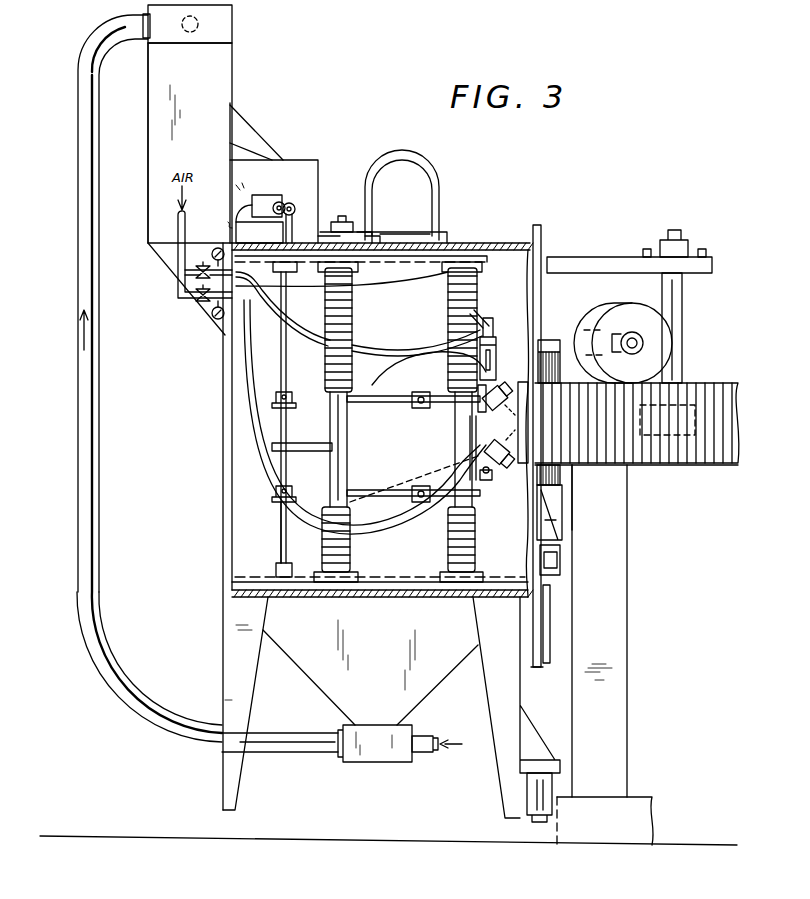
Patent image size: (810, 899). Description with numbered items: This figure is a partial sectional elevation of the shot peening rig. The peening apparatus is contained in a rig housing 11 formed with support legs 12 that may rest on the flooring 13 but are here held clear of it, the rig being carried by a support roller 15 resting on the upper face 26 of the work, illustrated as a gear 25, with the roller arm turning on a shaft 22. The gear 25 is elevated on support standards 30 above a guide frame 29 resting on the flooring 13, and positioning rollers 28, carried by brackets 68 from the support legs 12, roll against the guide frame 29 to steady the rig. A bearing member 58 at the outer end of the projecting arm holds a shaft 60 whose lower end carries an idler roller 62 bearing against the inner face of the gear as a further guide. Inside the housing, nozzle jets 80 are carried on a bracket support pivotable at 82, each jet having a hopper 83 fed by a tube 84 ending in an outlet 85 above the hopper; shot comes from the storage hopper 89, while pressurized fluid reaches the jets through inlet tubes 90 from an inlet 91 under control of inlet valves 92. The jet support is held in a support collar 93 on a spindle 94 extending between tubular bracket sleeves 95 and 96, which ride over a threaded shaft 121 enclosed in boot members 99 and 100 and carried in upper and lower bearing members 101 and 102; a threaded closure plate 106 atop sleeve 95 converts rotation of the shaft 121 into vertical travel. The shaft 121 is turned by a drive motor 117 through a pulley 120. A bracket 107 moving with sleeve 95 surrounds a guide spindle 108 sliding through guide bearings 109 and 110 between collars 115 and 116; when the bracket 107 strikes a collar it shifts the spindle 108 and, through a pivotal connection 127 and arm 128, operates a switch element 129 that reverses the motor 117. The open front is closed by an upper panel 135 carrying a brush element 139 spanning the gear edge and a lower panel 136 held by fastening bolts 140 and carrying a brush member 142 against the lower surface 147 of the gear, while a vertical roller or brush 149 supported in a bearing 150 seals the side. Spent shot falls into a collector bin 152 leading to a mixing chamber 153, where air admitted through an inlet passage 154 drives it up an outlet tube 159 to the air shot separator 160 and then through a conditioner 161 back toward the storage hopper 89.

The rig housing 11 is at (228, 404).
The support legs 12 is at (224, 672).
The flooring 13 is at (297, 838).
The support roller 15 is at (610, 314).
The shaft 22 is at (645, 343).
The gear 25 is at (646, 463).
The upper face 26 is at (706, 384).
The positioning rollers 28 is at (530, 800).
The guide frame 29 is at (602, 832).
The support standards 30 is at (627, 727).
The bearing member 58 is at (712, 263).
The shaft 60 is at (682, 286).
The idler roller 62 is at (720, 424).
The brackets 68 is at (520, 768).
The nozzle jets 80 is at (507, 422).
The pivot 82 is at (490, 394).
The hopper 83 is at (468, 450).
The feed tube 84 is at (486, 332).
The outlet 85 is at (496, 352).
The storage hopper 89 is at (150, 159).
The inlet tubes 90 is at (400, 414).
The inlet 91 is at (178, 222).
The inlet valves 92 is at (200, 297).
The support collar 93 is at (414, 500).
The spindle 94 is at (402, 401).
The tubular bracket sleeve 95 is at (347, 438).
The tubular bracket sleeve 96 is at (456, 464).
The boot member 99 is at (350, 553).
The boot member 100 is at (352, 304).
The upper bearing member 101 is at (358, 262).
The lower bearing member 102 is at (330, 597).
The closure plate member 106 is at (286, 404).
The bracket 107 is at (312, 451).
The guide spindle 108 is at (281, 537).
The guide bearing 109 is at (278, 572).
The guide bearing 110 is at (298, 268).
The collar 115 is at (276, 496).
The collar 116 is at (280, 394).
The drive motor 117 is at (430, 170).
The pulley 120 is at (341, 222).
The threaded shaft 121 is at (342, 233).
The pivotal connection 127 is at (296, 206).
The arm 128 is at (280, 202).
The switch element 129 is at (258, 195).
The upper closing panel 135 is at (542, 232).
The lower closing panel 136 is at (541, 668).
The brush element 139 is at (555, 340).
The fastening bolts 140 is at (551, 595).
The brush member 142 is at (562, 487).
The lower surface 147 is at (574, 465).
The vertical roller or brush 149 is at (562, 524).
The bearing 150 is at (562, 572).
The collector bin 152 is at (320, 678).
The air ejector 153 is at (378, 762).
The inlet passage 154 is at (426, 735).
The outlet tube 159 is at (80, 68).
The air shot separator 160 is at (232, 20).
The dust collector 161 is at (232, 58).